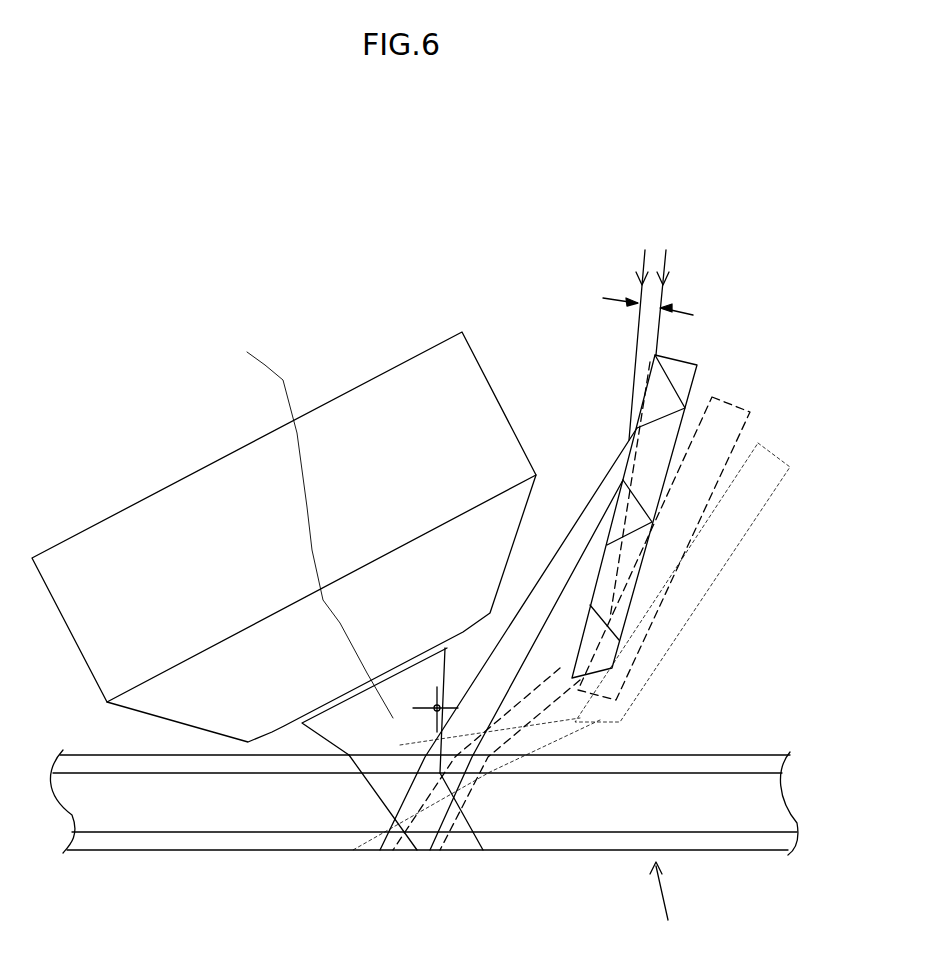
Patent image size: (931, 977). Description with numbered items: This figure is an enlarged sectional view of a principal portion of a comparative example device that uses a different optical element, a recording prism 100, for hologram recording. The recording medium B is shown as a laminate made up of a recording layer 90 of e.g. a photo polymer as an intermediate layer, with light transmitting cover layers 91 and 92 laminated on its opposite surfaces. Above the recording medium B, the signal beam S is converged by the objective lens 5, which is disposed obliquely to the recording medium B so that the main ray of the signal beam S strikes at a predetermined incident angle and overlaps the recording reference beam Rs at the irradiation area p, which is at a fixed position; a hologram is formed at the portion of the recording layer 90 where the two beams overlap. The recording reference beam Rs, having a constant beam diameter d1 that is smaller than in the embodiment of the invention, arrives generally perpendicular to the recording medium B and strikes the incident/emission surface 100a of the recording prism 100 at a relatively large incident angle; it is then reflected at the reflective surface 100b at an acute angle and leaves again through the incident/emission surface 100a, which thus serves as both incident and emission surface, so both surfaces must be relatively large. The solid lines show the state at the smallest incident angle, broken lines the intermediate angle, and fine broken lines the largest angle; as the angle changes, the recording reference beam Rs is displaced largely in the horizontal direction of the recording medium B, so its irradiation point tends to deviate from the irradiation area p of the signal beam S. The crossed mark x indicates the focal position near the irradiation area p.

The objective lens 5 is at (467, 338).
The recording layer 90 is at (445, 806).
The cover layer 91 is at (775, 770).
The cover layer 92 is at (787, 840).
The recording prism 100 is at (670, 503).
The incident/emission surface 100a is at (648, 390).
The reflective surface 100b is at (695, 386).
The signal beam S is at (310, 528).
The recording reference beam Rs is at (640, 272).
The beam diameter d1 is at (665, 313).
The focal point x is at (437, 710).
The irradiation area p is at (478, 808).
The recording medium B is at (668, 904).